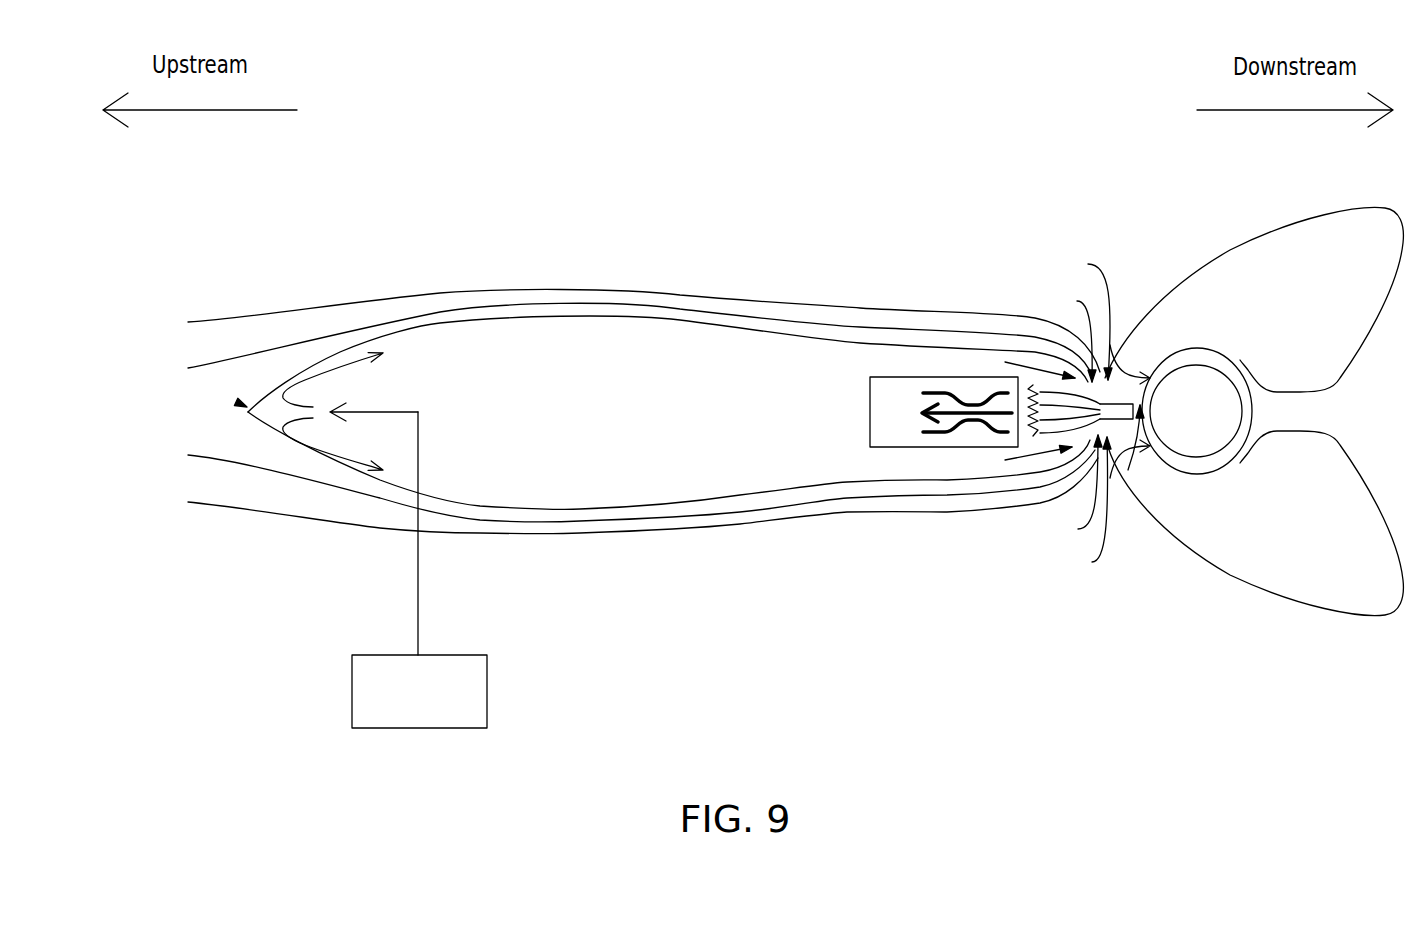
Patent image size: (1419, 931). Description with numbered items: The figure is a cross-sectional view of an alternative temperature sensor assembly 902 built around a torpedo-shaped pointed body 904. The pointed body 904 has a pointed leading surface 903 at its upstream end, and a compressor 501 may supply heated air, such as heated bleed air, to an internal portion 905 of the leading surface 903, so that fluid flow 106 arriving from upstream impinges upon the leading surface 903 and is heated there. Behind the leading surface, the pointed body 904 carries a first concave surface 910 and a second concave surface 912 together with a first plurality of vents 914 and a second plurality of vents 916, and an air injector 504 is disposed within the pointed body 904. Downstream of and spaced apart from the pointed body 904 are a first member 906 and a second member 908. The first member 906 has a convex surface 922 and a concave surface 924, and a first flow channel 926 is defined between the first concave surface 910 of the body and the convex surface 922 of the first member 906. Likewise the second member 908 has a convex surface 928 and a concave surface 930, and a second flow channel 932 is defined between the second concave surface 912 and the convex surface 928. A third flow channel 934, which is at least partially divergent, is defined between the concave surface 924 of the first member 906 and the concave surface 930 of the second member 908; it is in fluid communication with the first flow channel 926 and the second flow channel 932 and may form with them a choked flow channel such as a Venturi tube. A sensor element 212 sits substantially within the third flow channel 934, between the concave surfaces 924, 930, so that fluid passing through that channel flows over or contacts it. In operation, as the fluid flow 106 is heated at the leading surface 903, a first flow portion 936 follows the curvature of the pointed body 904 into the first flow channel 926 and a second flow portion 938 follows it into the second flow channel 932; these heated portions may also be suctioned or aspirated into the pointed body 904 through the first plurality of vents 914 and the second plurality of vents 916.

The alternative temperature sensor assembly 902 is at (850, 138).
The pointed leading surface 903 is at (245, 406).
The fluid flow 106 is at (123, 414).
The pointed body 904 is at (582, 393).
The internal portion of leading surface 905 is at (296, 381).
The first flow portion 936 is at (316, 339).
The second flow portion 938 is at (320, 484).
The compressor 501 is at (437, 687).
The air injector 504 is at (914, 425).
The first plurality of vents 914 is at (1020, 362).
The second plurality of vents 916 is at (1019, 460).
The first concave surface 910 is at (1066, 336).
The first flow channel 926 is at (1080, 317).
The second concave surface 912 is at (1069, 489).
The second flow channel 932 is at (1081, 507).
The convex surface of first member 922 is at (1117, 365).
The convex surface of second member 928 is at (1120, 460).
The third flow channel 934 is at (1128, 470).
The sensor element 212 is at (1179, 424).
The concave surface of first member 924 is at (1226, 352).
The concave surface of second member 930 is at (1220, 472).
The first member 906 is at (1297, 290).
The second member 908 is at (1297, 551).